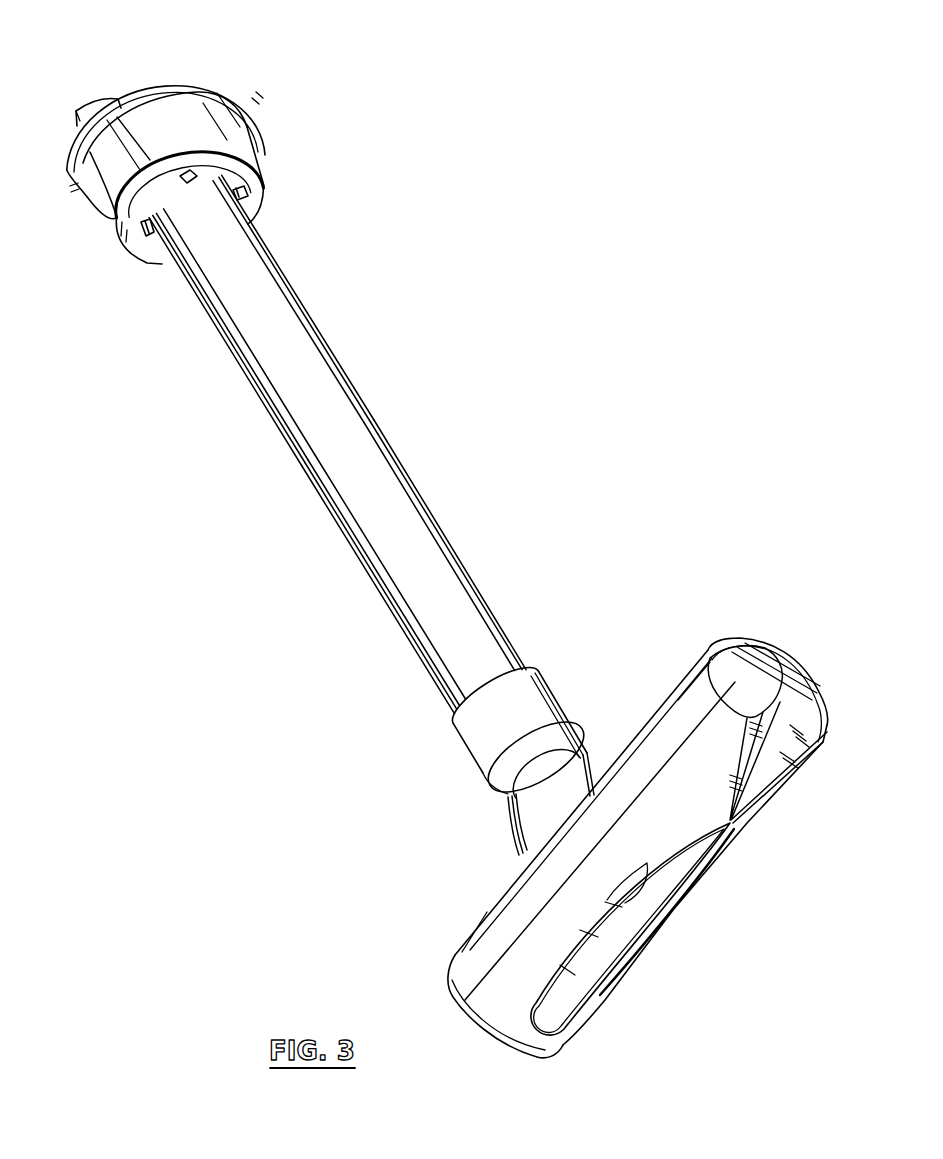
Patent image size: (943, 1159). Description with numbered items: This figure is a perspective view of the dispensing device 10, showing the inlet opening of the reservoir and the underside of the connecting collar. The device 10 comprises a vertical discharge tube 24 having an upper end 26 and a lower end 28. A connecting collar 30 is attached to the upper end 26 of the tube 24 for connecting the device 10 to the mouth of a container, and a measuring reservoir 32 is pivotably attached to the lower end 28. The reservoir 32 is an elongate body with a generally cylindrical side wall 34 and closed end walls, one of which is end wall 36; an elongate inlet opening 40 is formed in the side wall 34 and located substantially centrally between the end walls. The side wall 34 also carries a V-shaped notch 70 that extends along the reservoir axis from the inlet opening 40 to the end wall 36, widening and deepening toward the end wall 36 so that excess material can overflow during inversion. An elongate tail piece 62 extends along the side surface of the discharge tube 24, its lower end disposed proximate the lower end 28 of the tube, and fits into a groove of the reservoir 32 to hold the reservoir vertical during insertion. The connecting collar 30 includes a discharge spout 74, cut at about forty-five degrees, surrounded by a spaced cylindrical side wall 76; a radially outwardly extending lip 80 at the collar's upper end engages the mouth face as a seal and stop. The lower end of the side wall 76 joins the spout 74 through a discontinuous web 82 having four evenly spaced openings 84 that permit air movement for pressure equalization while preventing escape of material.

The dispensing device 10 is at (395, 367).
The discharge tube 24 is at (432, 512).
The upper end 26 is at (238, 240).
The lower end 28 is at (548, 708).
The connecting collar 30 is at (100, 287).
The measuring reservoir 32 is at (694, 616).
The side wall 34 is at (497, 908).
The end wall 36 is at (750, 670).
The inlet opening 40 is at (643, 903).
The tail piece 62 is at (513, 842).
The V-shaped notch 70 is at (755, 767).
The discharge spout 74 is at (93, 100).
The cylindrical side wall 76 is at (225, 128).
The lip 80 is at (172, 77).
The discontinuous web 82 is at (156, 258).
The openings 84 is at (198, 168).